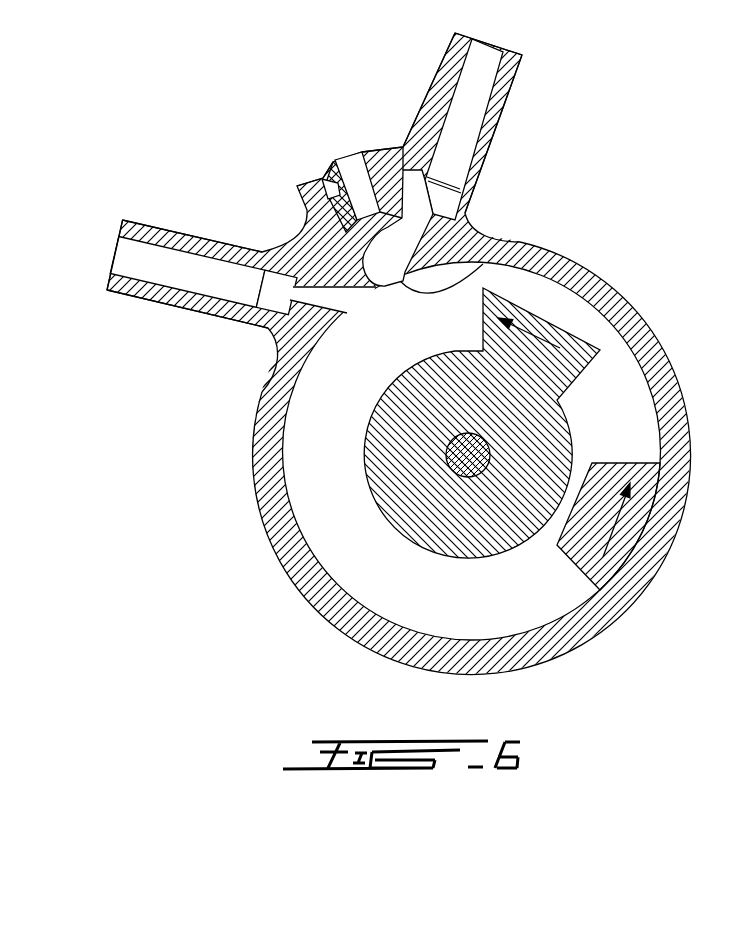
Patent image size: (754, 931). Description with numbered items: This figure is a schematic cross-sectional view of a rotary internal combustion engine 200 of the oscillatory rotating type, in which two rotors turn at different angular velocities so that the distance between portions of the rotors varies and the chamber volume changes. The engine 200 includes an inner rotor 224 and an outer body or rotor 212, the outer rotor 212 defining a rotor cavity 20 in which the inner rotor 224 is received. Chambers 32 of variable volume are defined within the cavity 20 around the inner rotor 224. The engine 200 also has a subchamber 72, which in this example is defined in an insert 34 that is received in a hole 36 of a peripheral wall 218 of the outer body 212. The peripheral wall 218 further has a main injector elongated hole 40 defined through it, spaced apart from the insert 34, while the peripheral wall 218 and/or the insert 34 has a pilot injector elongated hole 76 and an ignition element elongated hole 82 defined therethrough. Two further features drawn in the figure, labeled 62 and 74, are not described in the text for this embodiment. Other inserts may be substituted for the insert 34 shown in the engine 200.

The engine 200 is at (163, 145).
The rotor cavity 20 is at (627, 378).
The chambers 32 is at (623, 426).
The insert 34 is at (380, 162).
The hole 36 is at (343, 194).
The main injector elongated hole 40 is at (133, 260).
The valve seat block 62 is at (302, 184).
The subchamber 72 is at (388, 250).
The housing top wall 74 is at (505, 241).
The pilot injector elongated hole 76 is at (481, 62).
The ignition element elongated hole 82 is at (368, 196).
The outer body or rotor 212 is at (261, 554).
The peripheral wall 218 is at (268, 405).
The inner rotor 224 is at (578, 352).